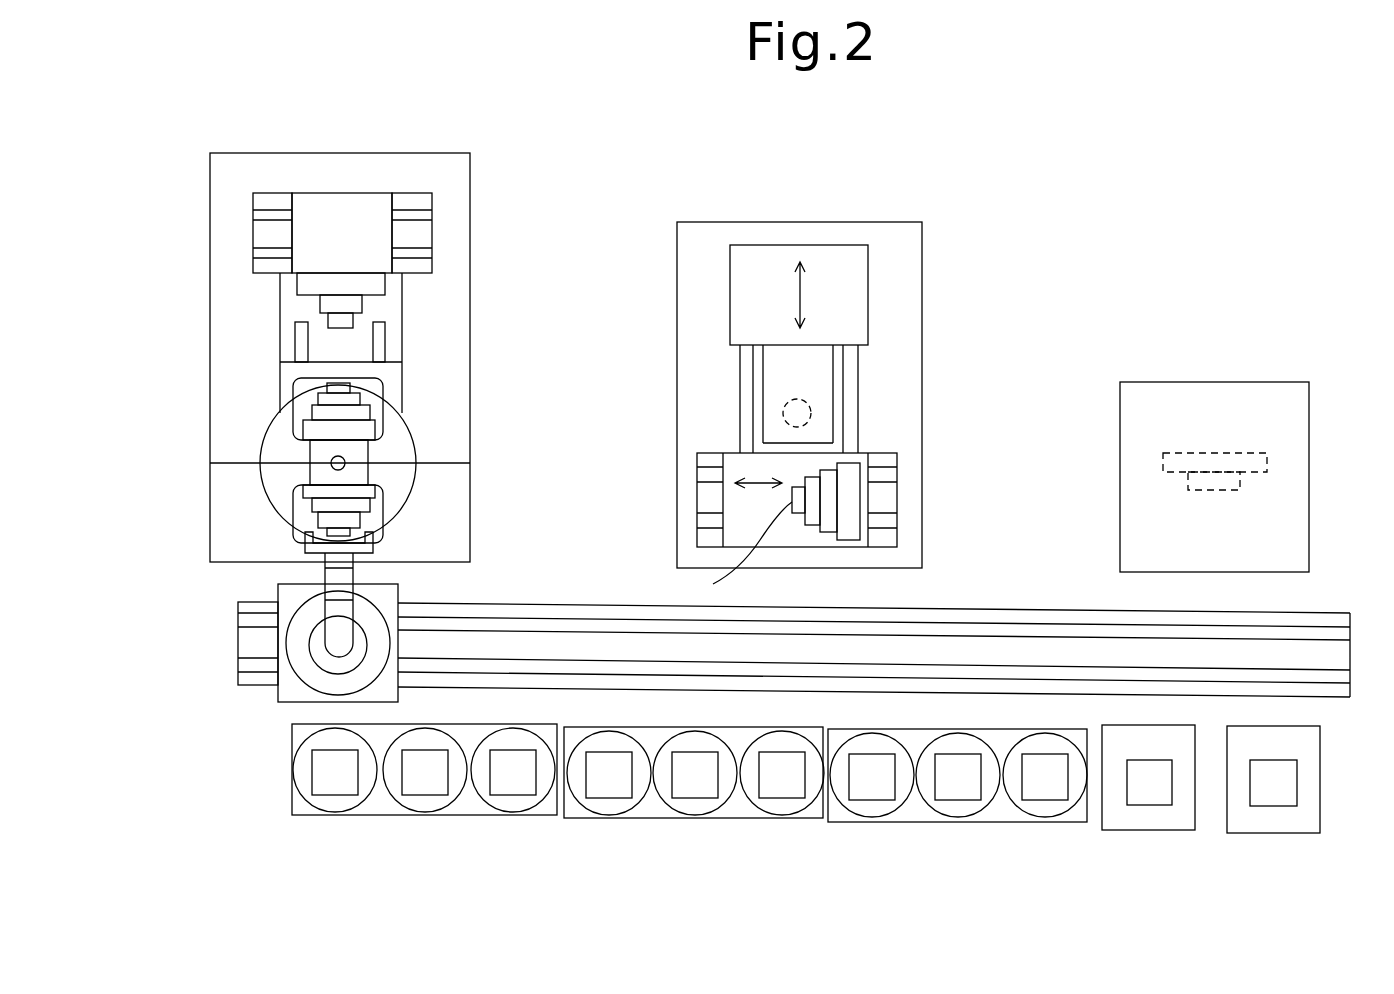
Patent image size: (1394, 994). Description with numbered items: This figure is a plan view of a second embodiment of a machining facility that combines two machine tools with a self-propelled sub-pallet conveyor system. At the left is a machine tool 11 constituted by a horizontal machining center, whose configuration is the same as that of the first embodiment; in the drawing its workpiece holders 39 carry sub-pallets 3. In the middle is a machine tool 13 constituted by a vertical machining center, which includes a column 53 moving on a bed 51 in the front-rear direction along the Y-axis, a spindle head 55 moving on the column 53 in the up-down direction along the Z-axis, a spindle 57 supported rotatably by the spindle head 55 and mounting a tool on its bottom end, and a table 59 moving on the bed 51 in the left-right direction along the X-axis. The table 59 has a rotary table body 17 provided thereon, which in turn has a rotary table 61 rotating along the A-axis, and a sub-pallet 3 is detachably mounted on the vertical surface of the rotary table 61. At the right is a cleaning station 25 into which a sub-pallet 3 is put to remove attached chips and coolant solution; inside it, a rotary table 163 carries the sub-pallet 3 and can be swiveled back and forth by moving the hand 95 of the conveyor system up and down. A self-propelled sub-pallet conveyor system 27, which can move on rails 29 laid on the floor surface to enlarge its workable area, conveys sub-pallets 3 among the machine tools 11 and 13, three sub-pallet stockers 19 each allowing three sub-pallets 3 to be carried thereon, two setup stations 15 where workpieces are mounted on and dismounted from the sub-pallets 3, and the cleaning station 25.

The machine tool 11 is at (322, 135).
The machine tool 13 is at (801, 363).
The sub-pallet 3 is at (363, 402).
The chuck holder 39 is at (302, 390).
The hand 95 is at (296, 546).
The self-propelled sub-pallet conveyor system 27 is at (280, 692).
The rails 29 is at (1300, 633).
The bed 51 is at (922, 265).
The column 53 is at (832, 268).
The spindle head 55 is at (790, 373).
The spindle 57 is at (810, 405).
The table 59 is at (748, 515).
The rotary table body 17 is at (852, 472).
The rotary table 61 is at (830, 525).
The cleaning station 25 is at (1190, 392).
The rotary table 163 is at (1253, 458).
The sub-pallet stocker 19 is at (477, 806).
The setup station 15 is at (1155, 818).